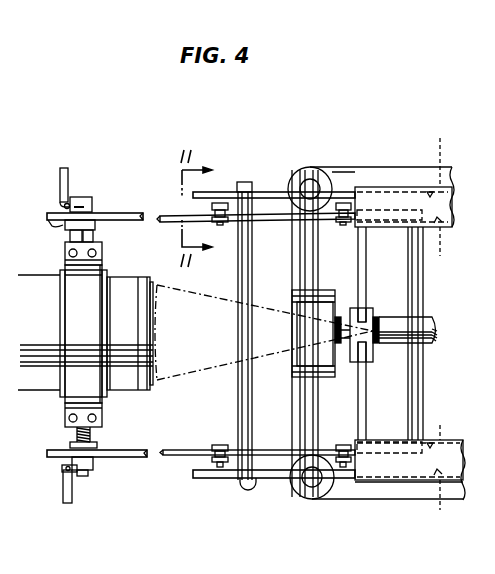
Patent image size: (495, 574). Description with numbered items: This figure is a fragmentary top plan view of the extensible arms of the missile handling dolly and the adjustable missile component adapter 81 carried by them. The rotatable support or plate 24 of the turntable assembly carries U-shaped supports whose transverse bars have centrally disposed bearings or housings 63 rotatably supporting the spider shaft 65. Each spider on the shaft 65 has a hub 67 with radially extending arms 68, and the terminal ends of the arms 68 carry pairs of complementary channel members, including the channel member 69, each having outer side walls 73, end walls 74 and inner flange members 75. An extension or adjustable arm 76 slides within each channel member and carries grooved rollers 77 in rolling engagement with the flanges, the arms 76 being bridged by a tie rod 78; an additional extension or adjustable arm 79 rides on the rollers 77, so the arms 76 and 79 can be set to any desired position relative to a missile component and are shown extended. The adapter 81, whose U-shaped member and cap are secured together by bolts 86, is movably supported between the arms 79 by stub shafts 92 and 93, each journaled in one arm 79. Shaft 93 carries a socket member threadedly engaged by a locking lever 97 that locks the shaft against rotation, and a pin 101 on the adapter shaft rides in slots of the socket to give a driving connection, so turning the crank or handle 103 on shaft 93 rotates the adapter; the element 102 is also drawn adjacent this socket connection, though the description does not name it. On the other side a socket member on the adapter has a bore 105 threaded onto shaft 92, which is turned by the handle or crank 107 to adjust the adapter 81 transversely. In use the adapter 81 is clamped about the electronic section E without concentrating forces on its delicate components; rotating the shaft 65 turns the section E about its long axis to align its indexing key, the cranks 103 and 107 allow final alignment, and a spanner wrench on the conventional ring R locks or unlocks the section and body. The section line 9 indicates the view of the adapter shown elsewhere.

The section line 9- 9 is at (80, 194).
The support or plate 24 is at (340, 167).
The bearing or housing 63 is at (319, 339).
The shaft 65 is at (431, 317).
The hub 67 is at (371, 309).
The arm 68 is at (366, 268).
The channel member 69 is at (378, 187).
The outer side wall 73 is at (442, 325).
The end wall 74 is at (443, 205).
The inner flange member 75 is at (432, 333).
The extension or adjustable arm 76 is at (262, 192).
The grooved roller 77 is at (220, 227).
The tie rod 78 is at (248, 490).
The additional extension or adjustable arm 79 is at (162, 216).
The adapter 81 is at (61, 301).
The bolt 86 is at (70, 252).
The stub shaft 92 is at (89, 474).
The stub shaft 93 is at (82, 197).
The locking lever 97 is at (53, 223).
The pin 101 is at (90, 236).
The bolt 102 is at (88, 229).
The crank or handle 103 is at (61, 180).
The bore 105 is at (92, 435).
The handle or crank 107 is at (63, 487).
The electronic section E is at (43, 384).
The ring R is at (146, 384).